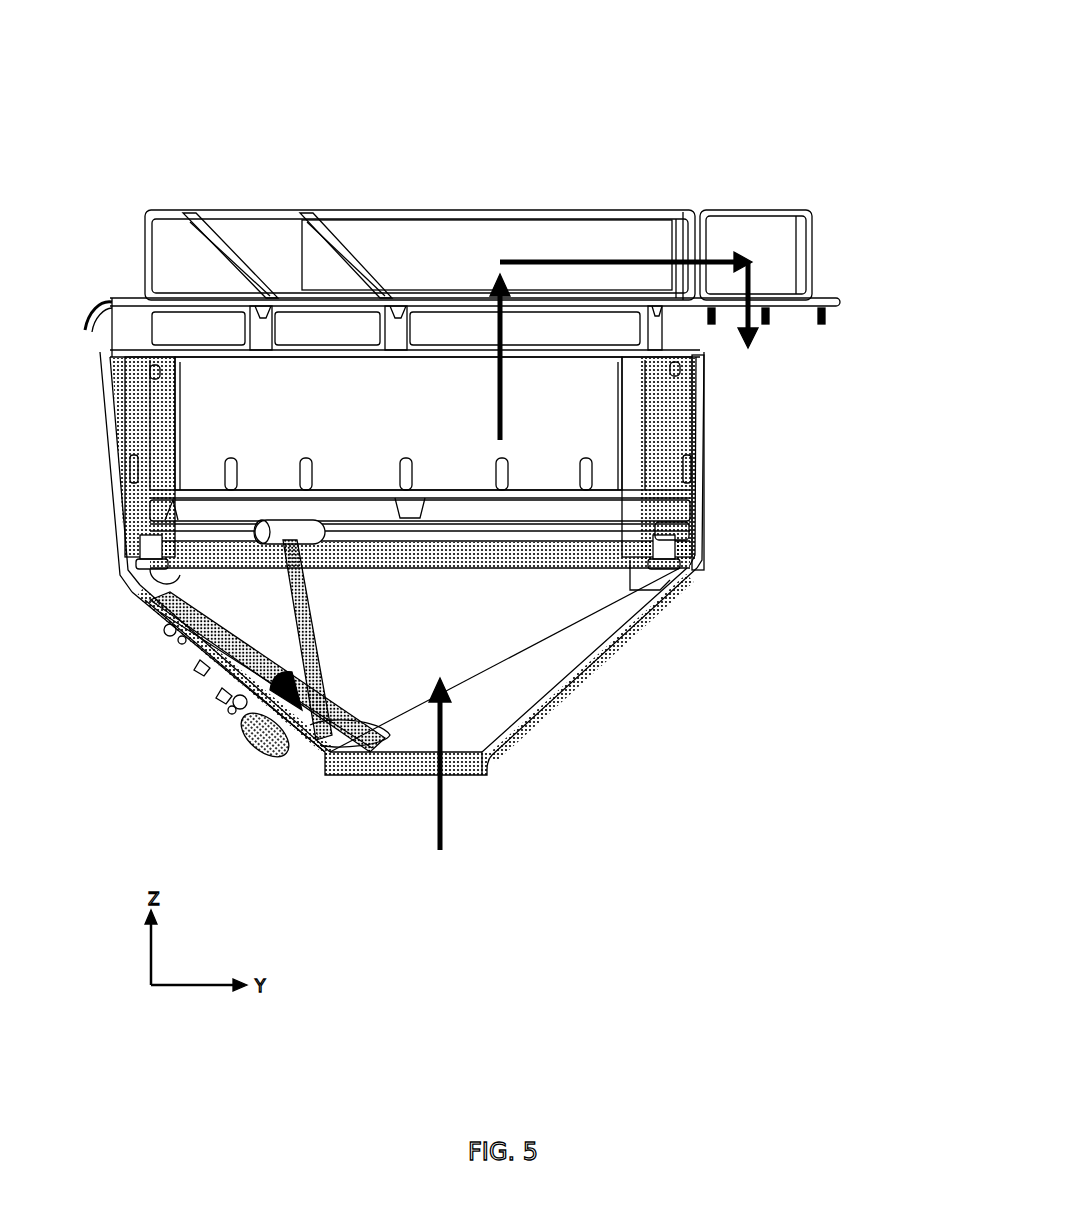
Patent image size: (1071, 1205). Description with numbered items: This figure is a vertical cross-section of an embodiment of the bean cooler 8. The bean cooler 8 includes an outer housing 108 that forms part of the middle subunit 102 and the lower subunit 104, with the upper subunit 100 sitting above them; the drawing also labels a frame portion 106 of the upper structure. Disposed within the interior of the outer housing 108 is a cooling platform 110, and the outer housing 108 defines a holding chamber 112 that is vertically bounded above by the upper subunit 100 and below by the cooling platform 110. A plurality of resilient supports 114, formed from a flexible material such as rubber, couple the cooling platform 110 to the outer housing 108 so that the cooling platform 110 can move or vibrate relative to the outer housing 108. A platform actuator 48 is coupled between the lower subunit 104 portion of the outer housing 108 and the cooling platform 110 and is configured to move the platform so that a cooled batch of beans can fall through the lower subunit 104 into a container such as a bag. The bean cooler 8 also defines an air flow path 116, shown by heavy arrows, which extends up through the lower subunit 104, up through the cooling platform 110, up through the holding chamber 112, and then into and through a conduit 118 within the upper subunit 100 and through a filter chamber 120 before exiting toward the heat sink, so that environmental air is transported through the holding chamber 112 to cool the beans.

The bean cooler 8 is at (603, 66).
The platform actuator 48 is at (298, 600).
The upper subunit 100 is at (835, 257).
The middle subunit 102 is at (720, 460).
The lower subunit 104 is at (625, 673).
The upper frame 106 is at (266, 236).
The outer housing 108 is at (704, 412).
The cooling platform 110 is at (605, 510).
The holding chamber 112 is at (235, 420).
The resilient supports 114 is at (150, 545).
The air flow path 116 is at (571, 262).
The conduit 118 is at (423, 233).
The filter chamber 120 is at (458, 326).